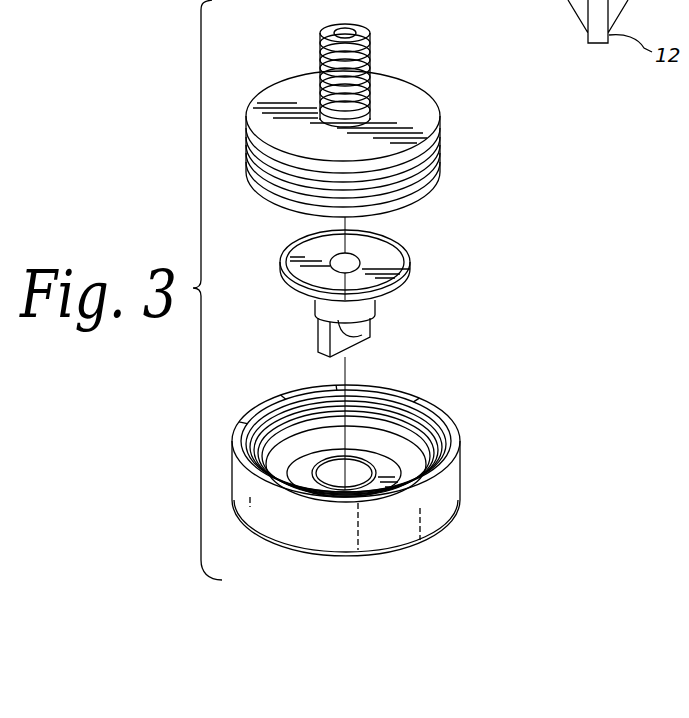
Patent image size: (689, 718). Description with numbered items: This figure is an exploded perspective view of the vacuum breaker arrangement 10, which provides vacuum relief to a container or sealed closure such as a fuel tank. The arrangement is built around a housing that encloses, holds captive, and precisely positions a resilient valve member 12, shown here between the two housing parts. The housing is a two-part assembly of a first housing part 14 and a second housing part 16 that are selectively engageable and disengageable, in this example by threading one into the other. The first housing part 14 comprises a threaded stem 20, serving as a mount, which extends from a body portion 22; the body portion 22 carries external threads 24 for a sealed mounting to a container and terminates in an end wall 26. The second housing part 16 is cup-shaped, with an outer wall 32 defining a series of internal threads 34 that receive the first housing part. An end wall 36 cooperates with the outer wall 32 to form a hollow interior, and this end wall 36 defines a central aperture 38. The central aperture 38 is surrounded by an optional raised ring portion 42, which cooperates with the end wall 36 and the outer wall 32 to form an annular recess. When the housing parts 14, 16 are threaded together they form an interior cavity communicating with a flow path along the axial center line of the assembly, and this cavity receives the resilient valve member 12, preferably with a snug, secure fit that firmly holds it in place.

The vacuum breaker arrangement 10 is at (471, 121).
The resilient valve member 12 is at (405, 263).
The first housing part 14 is at (370, 130).
The second housing part 16 is at (385, 461).
The threaded stem 20 is at (320, 43).
The body portion 22 is at (292, 206).
The external threads 24 is at (370, 186).
The end wall 26 is at (410, 93).
The outer wall 32 is at (450, 482).
The internal threads 34 is at (396, 418).
The end wall 36 is at (278, 463).
The central aperture 38 is at (365, 472).
The raised ring portion 42 is at (415, 476).